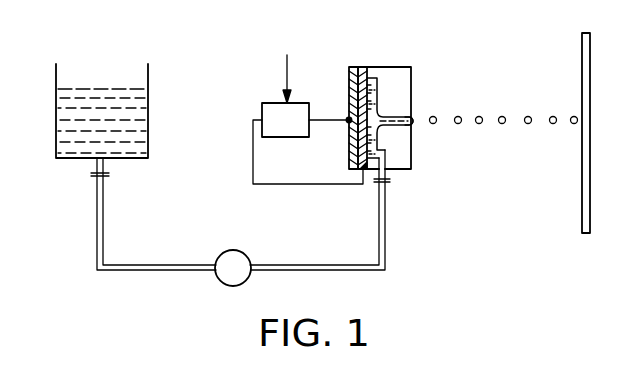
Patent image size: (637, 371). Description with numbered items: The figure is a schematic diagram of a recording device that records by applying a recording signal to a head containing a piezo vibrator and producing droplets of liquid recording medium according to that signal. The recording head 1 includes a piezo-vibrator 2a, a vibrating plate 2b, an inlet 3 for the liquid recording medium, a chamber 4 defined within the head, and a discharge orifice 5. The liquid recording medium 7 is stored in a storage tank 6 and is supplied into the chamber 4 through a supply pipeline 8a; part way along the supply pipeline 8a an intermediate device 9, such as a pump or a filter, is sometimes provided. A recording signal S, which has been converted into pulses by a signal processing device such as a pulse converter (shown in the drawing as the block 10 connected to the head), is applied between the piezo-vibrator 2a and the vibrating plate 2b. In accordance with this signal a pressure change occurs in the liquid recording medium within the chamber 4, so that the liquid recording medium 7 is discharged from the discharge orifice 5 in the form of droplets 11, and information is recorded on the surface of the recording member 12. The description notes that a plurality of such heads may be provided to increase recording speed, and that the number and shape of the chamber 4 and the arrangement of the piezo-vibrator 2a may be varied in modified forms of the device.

The recording head 1 is at (404, 67).
The piezo-vibrator 2a is at (353, 67).
The vibrating plate 2b is at (361, 67).
The inlet 3 is at (387, 160).
The chamber 4 is at (378, 86).
The discharge orifice 5 is at (414, 123).
The storage tank 6 is at (56, 109).
The liquid recording medium 7 is at (66, 148).
The supply pipeline 8a is at (149, 264).
The intermediate device 9 is at (229, 250).
The drive circuit 10 is at (268, 103).
The recording signal S is at (287, 67).
The droplets 11 is at (503, 115).
The recording member 12 is at (582, 209).